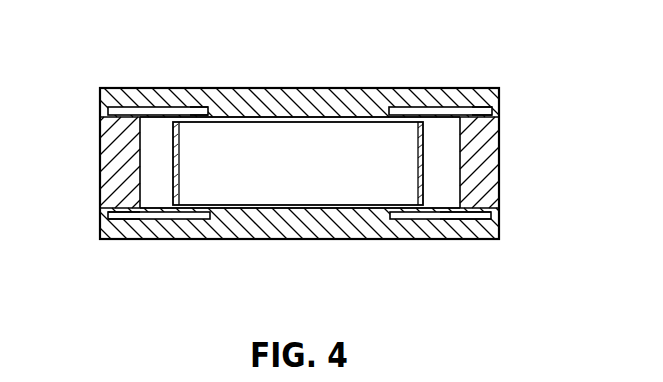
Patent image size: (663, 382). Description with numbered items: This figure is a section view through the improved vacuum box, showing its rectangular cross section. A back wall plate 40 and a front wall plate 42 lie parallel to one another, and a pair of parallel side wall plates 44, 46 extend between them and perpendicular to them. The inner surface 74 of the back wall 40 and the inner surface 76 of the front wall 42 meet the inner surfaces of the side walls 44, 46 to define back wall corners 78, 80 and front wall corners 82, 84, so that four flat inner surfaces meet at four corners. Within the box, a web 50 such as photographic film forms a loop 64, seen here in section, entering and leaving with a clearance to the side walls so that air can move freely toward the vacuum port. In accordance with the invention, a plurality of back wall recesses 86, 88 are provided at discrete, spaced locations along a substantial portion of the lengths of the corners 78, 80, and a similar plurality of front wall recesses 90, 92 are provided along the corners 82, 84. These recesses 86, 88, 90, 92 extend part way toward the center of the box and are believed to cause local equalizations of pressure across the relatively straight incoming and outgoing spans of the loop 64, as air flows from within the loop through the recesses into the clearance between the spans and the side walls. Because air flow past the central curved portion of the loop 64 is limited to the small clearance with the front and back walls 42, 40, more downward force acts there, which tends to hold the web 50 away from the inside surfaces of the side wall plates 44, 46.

The back wall plate 40 is at (290, 88).
The front wall plate 42 is at (328, 239).
The side wall plate 44 is at (101, 141).
The side wall plate 46 is at (487, 187).
The web 50 is at (180, 163).
The loop 64 is at (303, 172).
The inner surface of back wall 74 is at (345, 121).
The inner surface of front wall 76 is at (232, 208).
The back wall corner 78 is at (148, 100).
The back wall corner 80 is at (472, 104).
The front wall corner 82 is at (137, 222).
The front wall corner 84 is at (447, 220).
The back wall recess 86 is at (190, 108).
The back wall recess 88 is at (379, 106).
The front wall recess 90 is at (163, 220).
The front wall recess 92 is at (433, 220).